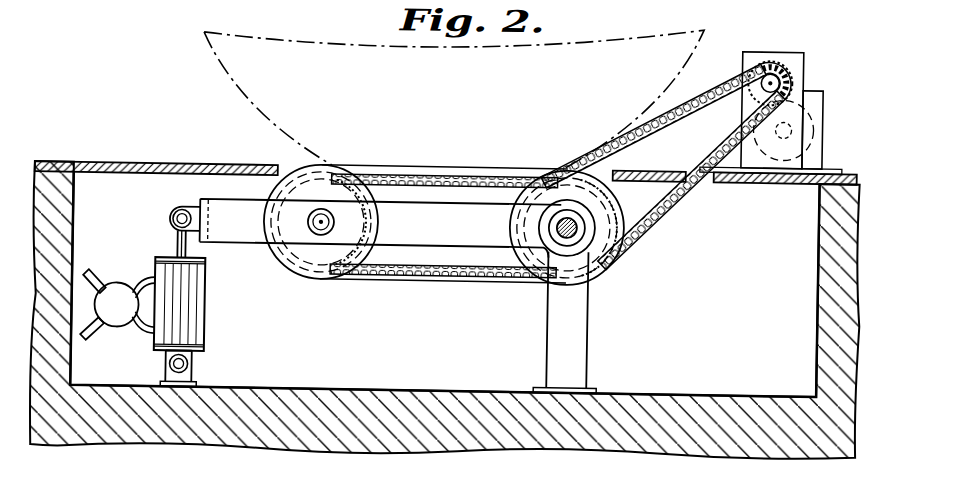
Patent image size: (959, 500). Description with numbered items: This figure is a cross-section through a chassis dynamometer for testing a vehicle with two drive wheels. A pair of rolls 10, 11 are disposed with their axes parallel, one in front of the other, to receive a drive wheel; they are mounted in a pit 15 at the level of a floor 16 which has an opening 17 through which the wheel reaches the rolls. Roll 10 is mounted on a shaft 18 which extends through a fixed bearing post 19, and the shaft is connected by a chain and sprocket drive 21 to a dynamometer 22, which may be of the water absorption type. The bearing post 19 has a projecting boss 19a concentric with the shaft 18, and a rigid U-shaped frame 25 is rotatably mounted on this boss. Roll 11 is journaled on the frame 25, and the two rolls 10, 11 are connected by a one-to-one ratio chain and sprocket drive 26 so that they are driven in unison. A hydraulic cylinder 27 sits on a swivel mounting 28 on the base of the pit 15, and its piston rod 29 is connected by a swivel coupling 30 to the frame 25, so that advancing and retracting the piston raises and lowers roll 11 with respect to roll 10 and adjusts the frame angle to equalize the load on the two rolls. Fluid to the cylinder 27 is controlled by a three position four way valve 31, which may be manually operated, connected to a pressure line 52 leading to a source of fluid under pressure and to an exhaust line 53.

The roll 10 is at (613, 260).
The roll 11 is at (332, 284).
The pit 15 is at (707, 373).
The floor 16 is at (147, 168).
The opening 17 is at (290, 166).
The shaft 18 is at (560, 222).
The bearing post 19 is at (578, 325).
The projecting boss 19a is at (567, 240).
The chain and sprocket drive 21 is at (700, 178).
The dynamometer 22 is at (813, 94).
The U-shaped frame 25 is at (250, 225).
The chain and sprocket drive 26 is at (353, 275).
The hydraulic cylinder 27 is at (193, 321).
The swivel mounting 28 is at (195, 367).
The piston rod 29 is at (177, 250).
The swivel coupling 30 is at (195, 209).
The valve 31 is at (118, 298).
The pressure line 52 is at (87, 276).
The exhaust line 53 is at (95, 341).